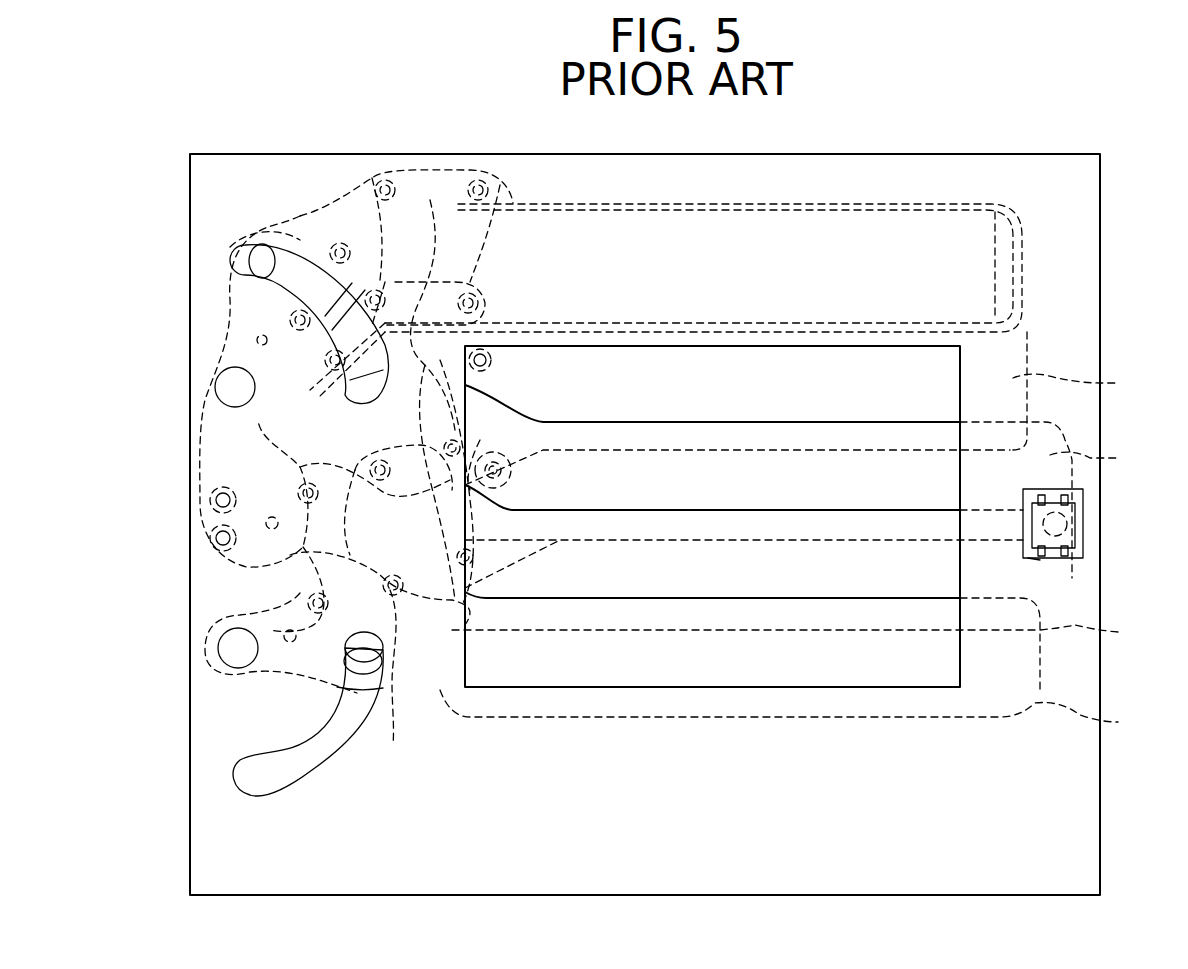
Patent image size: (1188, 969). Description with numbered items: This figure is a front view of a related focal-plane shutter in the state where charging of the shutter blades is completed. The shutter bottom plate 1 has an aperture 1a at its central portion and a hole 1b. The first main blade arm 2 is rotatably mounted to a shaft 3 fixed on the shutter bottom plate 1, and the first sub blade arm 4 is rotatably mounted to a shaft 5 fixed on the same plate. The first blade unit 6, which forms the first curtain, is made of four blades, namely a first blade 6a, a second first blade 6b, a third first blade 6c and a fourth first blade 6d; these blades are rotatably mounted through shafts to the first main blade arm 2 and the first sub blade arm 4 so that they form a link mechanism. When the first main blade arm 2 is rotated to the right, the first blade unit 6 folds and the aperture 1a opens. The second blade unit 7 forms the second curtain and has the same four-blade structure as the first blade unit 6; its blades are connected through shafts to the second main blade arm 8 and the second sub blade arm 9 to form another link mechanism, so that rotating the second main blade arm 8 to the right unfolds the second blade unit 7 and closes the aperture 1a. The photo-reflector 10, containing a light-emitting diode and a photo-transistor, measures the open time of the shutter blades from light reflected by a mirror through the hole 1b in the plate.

The shutter bottom plate 1 is at (985, 162).
The aperture 1a is at (812, 688).
The hole 1b is at (1042, 560).
The first main blade arm 2 is at (318, 693).
The shaft 3 is at (245, 655).
The first sub blade arm 4 is at (285, 566).
The shaft 5 is at (226, 547).
The first blade unit 6 is at (1035, 343).
The first blade 6a is at (1086, 381).
The second first blade 6b is at (812, 462).
The third first blade 6c is at (805, 595).
The fourth first blade 6d is at (800, 714).
The second blade unit 7 is at (1022, 234).
The second main blade arm 8 is at (296, 212).
The second sub blade arm 9 is at (470, 278).
The photo-reflector 10 is at (1083, 515).